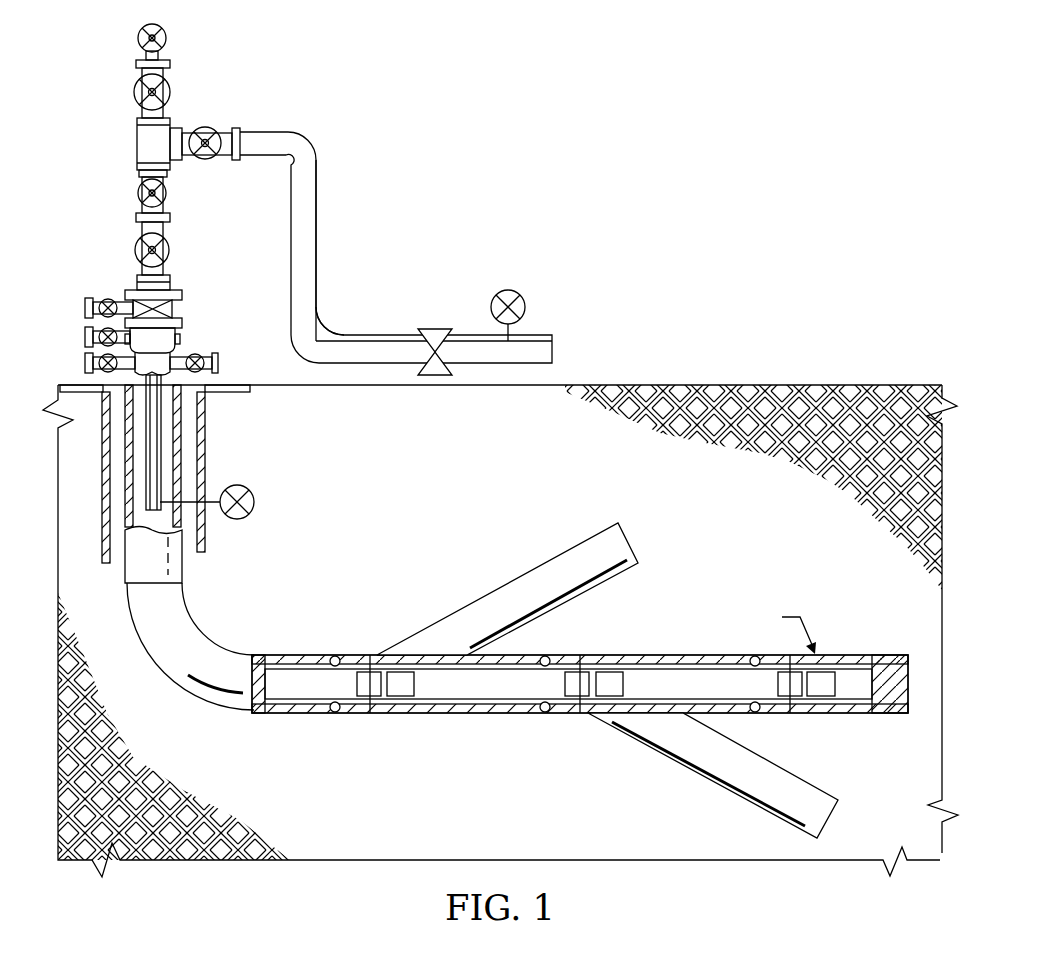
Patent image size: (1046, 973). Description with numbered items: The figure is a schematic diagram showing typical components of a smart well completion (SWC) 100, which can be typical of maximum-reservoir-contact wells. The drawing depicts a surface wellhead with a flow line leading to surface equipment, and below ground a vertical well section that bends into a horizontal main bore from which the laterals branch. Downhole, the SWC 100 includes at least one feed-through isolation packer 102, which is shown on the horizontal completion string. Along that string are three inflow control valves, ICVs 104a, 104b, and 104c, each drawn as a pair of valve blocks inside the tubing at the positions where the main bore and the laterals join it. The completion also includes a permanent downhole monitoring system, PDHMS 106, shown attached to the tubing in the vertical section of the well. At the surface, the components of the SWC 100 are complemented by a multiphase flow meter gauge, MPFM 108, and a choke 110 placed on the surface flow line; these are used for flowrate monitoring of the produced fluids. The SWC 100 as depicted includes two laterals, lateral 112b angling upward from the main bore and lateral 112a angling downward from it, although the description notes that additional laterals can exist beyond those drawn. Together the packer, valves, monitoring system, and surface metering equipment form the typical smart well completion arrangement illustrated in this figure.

The smart well completion 100 is at (699, 121).
The feed-through isolation packer 102 is at (326, 634).
The inflow control valve (ICV) 104a is at (844, 676).
The inflow control valve (ICV) 104b is at (554, 687).
The inflow control valve (ICV) 104c is at (344, 687).
The permanent downhole monitoring system (PDHMS) 106 is at (255, 498).
The multiphase flow meter (MPFM) gauge 108 is at (526, 308).
The choke 110 is at (437, 328).
The lateral 112a is at (700, 777).
The lateral 112b is at (495, 588).